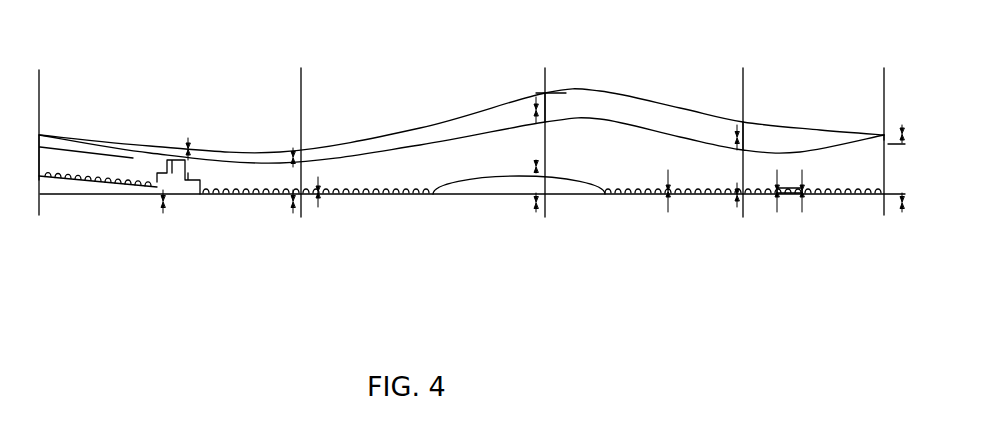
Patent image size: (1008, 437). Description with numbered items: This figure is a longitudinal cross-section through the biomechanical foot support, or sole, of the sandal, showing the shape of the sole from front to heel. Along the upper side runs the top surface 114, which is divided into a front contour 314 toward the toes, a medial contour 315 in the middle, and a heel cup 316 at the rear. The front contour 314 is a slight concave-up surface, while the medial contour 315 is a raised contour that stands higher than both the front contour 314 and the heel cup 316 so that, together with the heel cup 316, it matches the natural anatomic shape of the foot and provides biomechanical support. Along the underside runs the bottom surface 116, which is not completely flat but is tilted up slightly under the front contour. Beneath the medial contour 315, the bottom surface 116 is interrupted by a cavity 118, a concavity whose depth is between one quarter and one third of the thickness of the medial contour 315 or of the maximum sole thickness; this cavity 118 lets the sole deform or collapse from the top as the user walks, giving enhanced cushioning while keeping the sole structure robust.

The top surface 114 is at (354, 143).
The front contour 314 is at (133, 147).
The medial contour 315 is at (566, 92).
The heel cup 316 is at (784, 126).
The cavity 118 is at (475, 180).
The bottom surface 116 is at (630, 195).